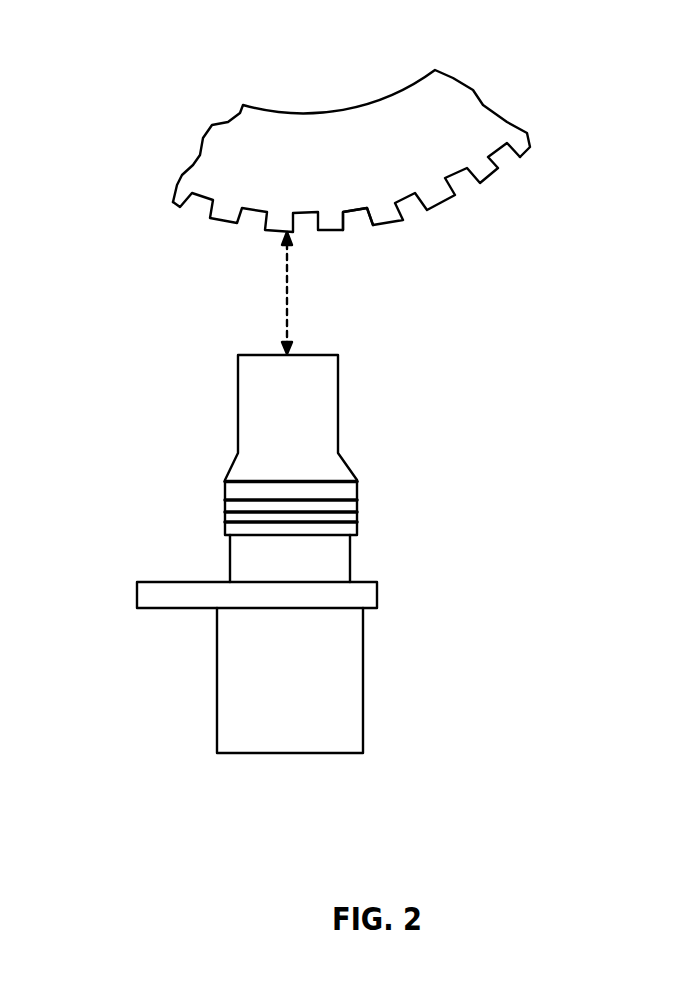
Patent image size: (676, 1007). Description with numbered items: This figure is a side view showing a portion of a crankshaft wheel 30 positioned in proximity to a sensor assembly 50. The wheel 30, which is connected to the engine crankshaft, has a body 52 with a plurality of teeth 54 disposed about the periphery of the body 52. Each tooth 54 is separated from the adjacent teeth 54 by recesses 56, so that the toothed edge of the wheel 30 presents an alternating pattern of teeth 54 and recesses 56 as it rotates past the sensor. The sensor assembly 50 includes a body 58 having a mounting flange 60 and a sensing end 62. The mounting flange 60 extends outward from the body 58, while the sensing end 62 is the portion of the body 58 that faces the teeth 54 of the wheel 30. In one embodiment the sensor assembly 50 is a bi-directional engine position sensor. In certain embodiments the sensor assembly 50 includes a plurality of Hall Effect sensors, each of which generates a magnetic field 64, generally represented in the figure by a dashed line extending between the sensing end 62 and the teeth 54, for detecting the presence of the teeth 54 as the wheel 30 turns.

The wheel 30 is at (372, 163).
The sensor assembly 50 is at (342, 565).
The body 52 is at (217, 163).
The teeth 54 is at (443, 210).
The recesses 56 is at (357, 213).
The body 58 is at (217, 710).
The mounting flange 60 is at (137, 598).
The sensing end 62 is at (237, 458).
The magnetic field 64 is at (287, 270).